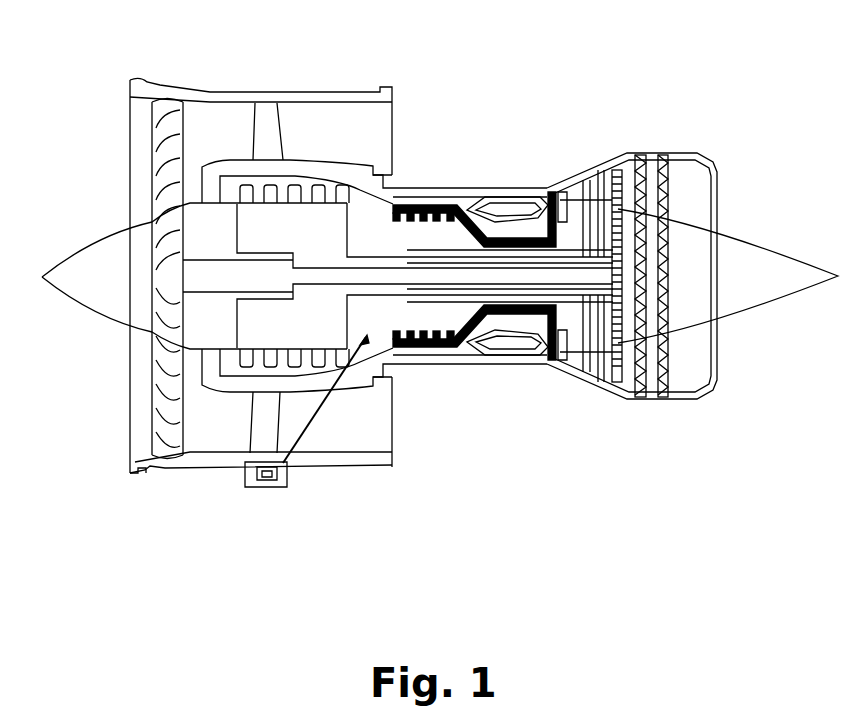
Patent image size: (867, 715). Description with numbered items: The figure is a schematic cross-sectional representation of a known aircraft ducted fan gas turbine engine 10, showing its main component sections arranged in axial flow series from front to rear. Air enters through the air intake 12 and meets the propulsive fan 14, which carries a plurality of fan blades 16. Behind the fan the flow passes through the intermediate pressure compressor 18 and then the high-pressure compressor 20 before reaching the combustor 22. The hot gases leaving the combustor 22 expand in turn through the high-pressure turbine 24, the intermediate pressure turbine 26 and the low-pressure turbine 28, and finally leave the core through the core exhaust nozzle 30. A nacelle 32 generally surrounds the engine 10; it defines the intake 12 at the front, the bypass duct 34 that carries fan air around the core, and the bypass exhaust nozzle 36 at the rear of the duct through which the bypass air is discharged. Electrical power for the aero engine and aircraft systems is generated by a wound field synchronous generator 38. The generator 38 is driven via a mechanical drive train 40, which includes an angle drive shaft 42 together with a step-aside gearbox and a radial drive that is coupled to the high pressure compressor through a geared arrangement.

The ducted fan gas turbine engine 10 is at (606, 97).
The air intake 12 is at (104, 406).
The propulsive fan 14 is at (157, 440).
The fan blades 16 is at (162, 405).
The intermediate pressure compressor 18 is at (257, 190).
The high-pressure compressor 20 is at (407, 348).
The combustor 22 is at (510, 367).
The high-pressure turbine 24 is at (553, 372).
The intermediate pressure turbine 26 is at (600, 368).
The low-pressure turbine 28 is at (650, 398).
The core exhaust nozzle 30 is at (722, 359).
The nacelle 32 is at (242, 100).
The bypass duct 34 is at (338, 120).
The bypass exhaust nozzle 36 is at (395, 123).
The wound field synchronous generator 38 is at (391, 255).
The mechanical drive train 40 is at (465, 260).
The angle drive shaft 42 is at (513, 240).